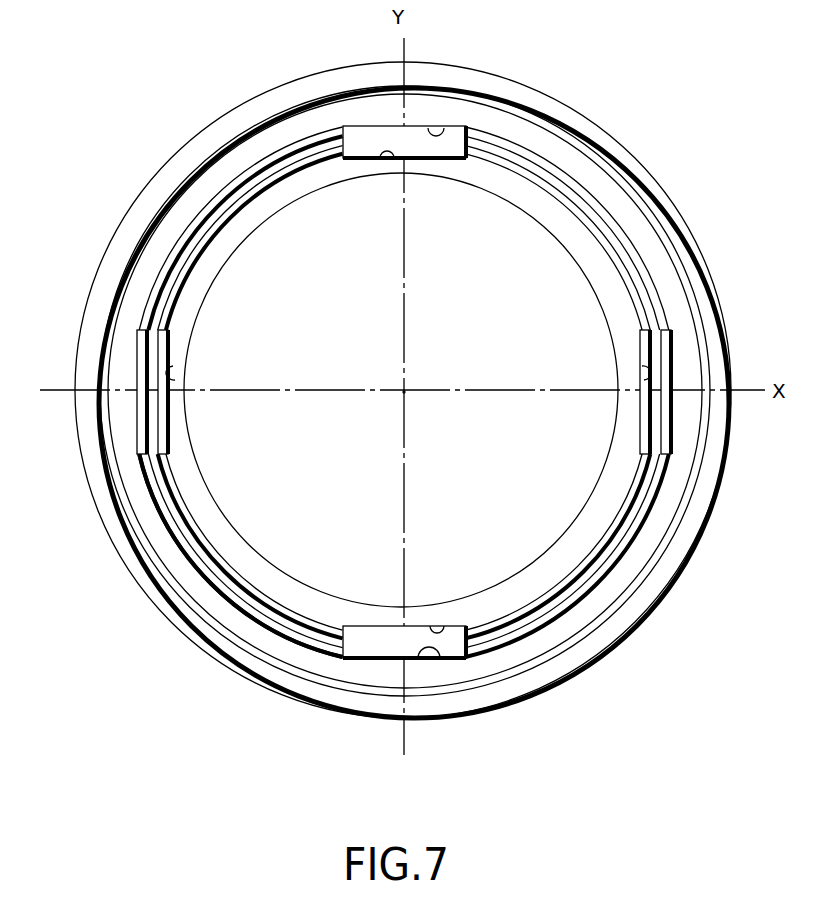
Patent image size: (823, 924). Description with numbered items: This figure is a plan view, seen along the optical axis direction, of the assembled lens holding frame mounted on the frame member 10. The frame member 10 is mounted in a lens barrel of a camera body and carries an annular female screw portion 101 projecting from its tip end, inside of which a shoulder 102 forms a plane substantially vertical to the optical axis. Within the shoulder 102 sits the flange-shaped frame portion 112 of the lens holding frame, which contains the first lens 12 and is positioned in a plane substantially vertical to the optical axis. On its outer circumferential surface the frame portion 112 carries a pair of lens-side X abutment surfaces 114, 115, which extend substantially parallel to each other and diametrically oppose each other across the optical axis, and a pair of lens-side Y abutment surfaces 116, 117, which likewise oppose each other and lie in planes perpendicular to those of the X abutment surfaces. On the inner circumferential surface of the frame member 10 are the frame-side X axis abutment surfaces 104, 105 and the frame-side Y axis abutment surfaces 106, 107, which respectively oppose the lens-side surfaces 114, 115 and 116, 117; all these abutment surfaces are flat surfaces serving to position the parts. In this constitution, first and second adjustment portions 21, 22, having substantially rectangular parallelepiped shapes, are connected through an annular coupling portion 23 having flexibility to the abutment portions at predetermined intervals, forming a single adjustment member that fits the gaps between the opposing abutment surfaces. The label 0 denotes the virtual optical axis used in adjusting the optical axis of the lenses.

The frame member 10 is at (236, 96).
The female screw portion 101 is at (195, 165).
The shoulder 102 is at (170, 488).
The frame portion 112 is at (225, 533).
The first lens 12 is at (553, 545).
The first adjustment portion 21 is at (376, 134).
The second adjustment portion 22 is at (377, 650).
The annular coupling portion 23 is at (305, 634).
The frame-side X axis abutment surface 104 is at (143, 352).
The frame-side X axis abutment surface 105 is at (668, 384).
The frame-side Y axis abutment surface 106 is at (436, 128).
The frame-side Y axis abutment surface 107 is at (447, 660).
The lens-side X abutment surface 114 is at (175, 380).
The lens-side X abutment surface 115 is at (643, 378).
The lens-side Y abutment surface 116 is at (387, 158).
The lens-side Y abutment surface 117 is at (450, 628).
The optical axis origin 0 is at (407, 394).